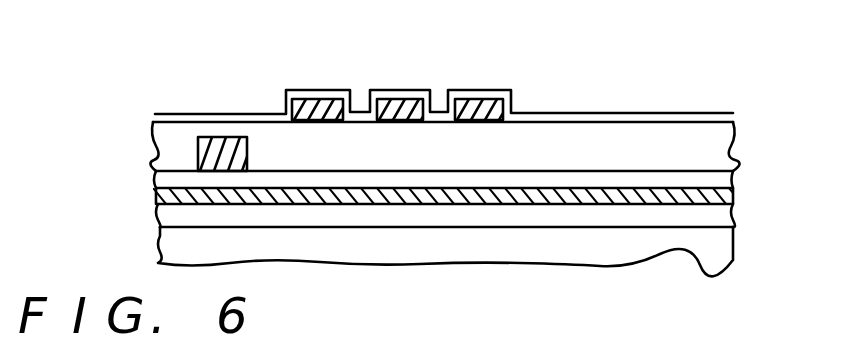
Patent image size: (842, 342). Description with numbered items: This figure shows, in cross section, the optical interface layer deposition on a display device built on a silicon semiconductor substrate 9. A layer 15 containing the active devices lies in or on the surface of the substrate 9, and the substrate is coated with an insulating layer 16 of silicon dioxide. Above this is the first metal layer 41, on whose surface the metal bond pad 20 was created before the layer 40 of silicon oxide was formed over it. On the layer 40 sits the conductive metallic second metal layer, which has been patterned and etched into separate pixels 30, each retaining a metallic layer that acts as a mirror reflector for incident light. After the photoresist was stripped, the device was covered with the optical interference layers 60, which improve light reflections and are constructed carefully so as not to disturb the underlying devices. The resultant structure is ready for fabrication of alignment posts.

The substrate 9 is at (722, 247).
The layer with active devices 15 is at (722, 218).
The insulating layer 16 is at (722, 193).
The first metal layer 41 is at (162, 184).
The layer of silicon oxide 40 is at (725, 151).
The metal bond pad 20 is at (200, 152).
The pixel 30 is at (318, 100).
The optical interference layers 60 is at (286, 89).